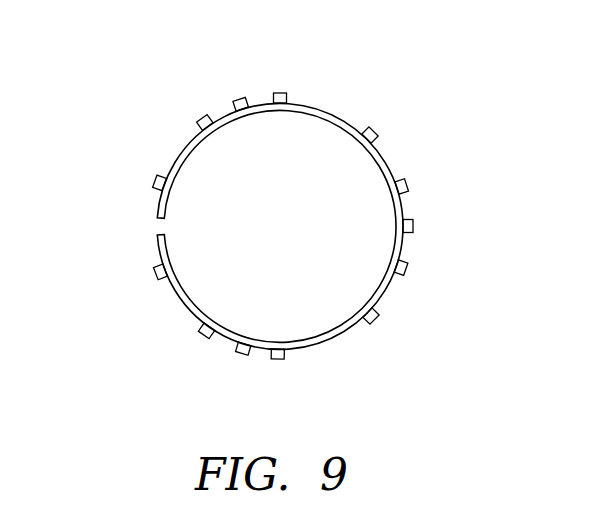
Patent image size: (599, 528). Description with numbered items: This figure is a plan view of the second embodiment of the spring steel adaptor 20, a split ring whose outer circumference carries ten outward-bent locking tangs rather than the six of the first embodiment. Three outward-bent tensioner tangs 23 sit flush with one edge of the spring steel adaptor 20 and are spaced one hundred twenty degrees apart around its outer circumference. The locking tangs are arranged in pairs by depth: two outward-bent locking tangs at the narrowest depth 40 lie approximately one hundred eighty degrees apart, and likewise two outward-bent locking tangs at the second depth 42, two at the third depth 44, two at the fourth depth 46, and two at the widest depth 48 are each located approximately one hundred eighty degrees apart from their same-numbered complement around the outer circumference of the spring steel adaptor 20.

The spring steel adaptor 20 is at (327, 105).
The outward-bent tensioner tangs 23 is at (237, 97).
The outward-bent locking tangs at the narrowest depth 40 is at (155, 278).
The outward-bent locking tangs at the second depth 42 is at (208, 340).
The outward-bent locking tangs at the third depth 44 is at (281, 89).
The outward-bent locking tangs at the fourth depth 46 is at (207, 113).
The outward-bent locking tangs at the widest depth 48 is at (157, 178).